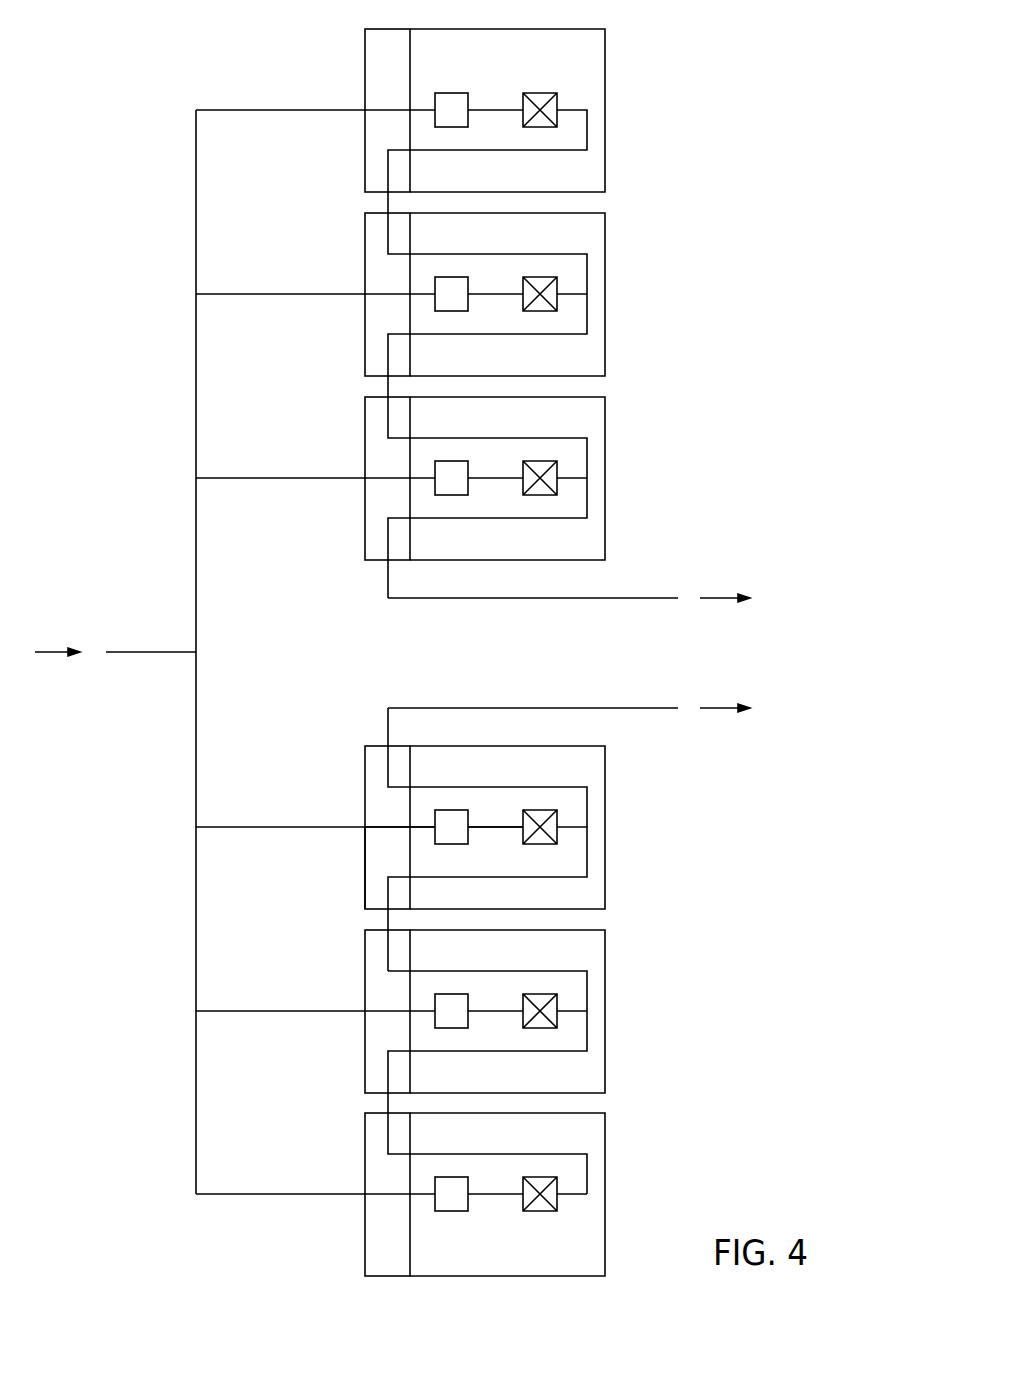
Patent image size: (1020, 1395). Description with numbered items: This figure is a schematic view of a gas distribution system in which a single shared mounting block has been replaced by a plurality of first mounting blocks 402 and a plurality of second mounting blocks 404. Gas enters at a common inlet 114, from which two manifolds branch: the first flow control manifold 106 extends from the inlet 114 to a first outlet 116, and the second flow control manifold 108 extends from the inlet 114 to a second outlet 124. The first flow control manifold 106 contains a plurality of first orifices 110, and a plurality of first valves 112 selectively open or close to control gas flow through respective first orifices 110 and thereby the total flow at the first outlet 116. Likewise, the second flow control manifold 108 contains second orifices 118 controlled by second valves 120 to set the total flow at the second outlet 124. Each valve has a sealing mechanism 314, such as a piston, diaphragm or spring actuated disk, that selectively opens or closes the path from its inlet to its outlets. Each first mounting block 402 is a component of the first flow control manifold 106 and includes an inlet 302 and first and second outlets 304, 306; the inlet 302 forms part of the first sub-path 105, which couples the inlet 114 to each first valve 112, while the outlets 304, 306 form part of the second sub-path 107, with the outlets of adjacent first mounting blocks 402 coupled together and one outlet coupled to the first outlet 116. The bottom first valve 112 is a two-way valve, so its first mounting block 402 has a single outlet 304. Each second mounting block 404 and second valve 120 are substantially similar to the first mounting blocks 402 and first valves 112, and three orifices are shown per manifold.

The first sub-path 105 is at (357, 857).
The first flow control manifold 106 is at (767, 826).
The second sub-path 107 is at (545, 884).
The second flow control manifold 108 is at (768, 108).
The first orifice 110 is at (452, 809).
The first valve 112 is at (463, 970).
The inlet 114 is at (135, 651).
The first outlet 116 is at (658, 707).
The second orifice 118 is at (452, 92).
The second valve 120 is at (605, 73).
The second outlet 124 is at (658, 597).
The inlet 302 is at (385, 828).
The first outlet 304 is at (402, 787).
The second outlet 306 is at (398, 878).
The mechanism 314 is at (541, 92).
The first mounting block 402 is at (365, 770).
The second mounting block 404 is at (365, 53).